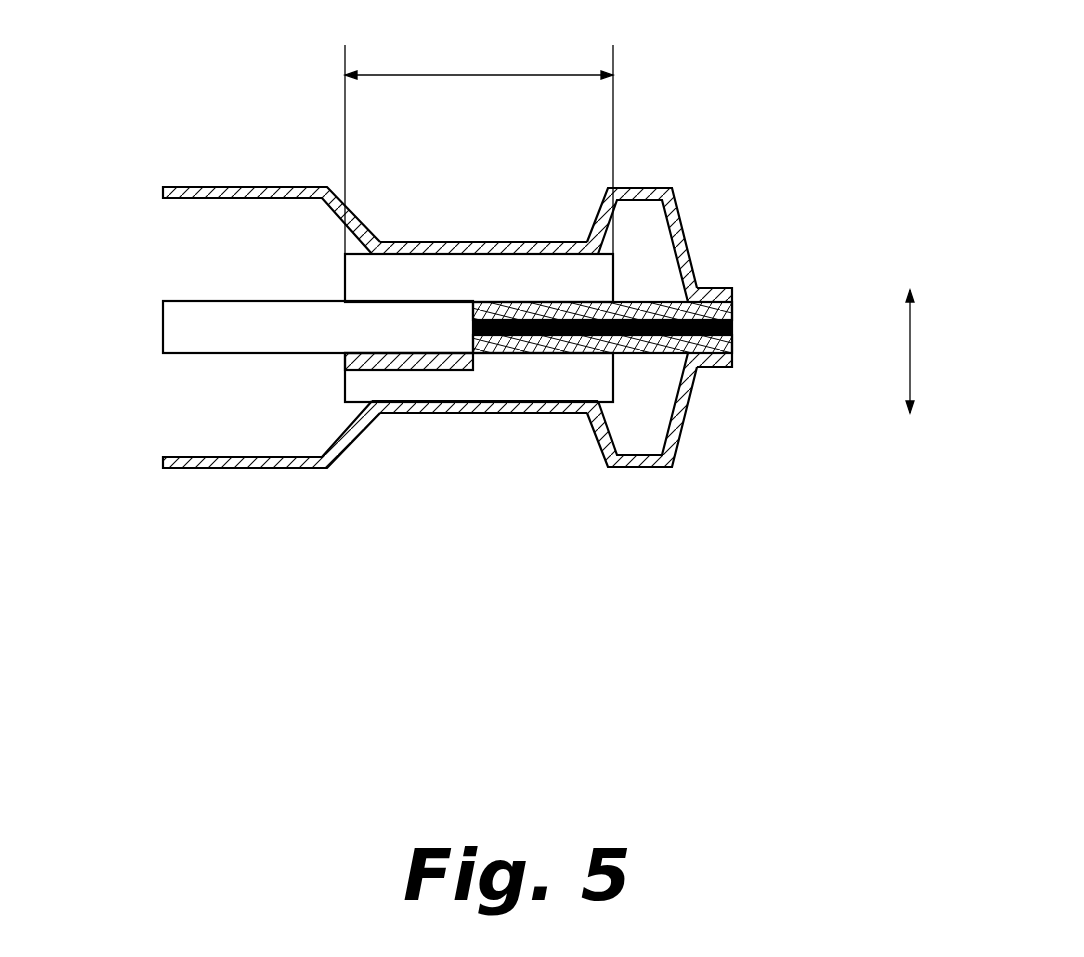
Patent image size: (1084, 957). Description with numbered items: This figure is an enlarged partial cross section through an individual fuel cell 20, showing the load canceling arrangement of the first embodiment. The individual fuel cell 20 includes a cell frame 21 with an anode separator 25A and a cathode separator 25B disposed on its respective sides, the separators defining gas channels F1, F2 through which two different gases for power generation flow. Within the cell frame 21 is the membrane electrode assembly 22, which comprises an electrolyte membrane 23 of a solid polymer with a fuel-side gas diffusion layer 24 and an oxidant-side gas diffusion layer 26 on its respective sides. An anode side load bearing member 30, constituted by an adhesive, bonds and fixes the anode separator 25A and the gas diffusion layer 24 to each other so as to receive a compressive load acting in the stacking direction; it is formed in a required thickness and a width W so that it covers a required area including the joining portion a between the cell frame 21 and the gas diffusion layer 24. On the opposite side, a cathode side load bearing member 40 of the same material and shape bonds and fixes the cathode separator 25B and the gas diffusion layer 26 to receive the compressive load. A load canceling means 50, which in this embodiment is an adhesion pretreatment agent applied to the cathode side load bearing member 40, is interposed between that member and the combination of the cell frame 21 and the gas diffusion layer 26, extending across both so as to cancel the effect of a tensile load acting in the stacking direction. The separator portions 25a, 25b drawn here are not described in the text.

The individual fuel cell 20 is at (514, 292).
The cell frame 21 is at (163, 328).
The membrane electrode assembly 22 is at (684, 361).
The electrolyte membrane 23 is at (732, 328).
The fuel-side gas diffusion layer 24 is at (732, 303).
The oxidant-side gas diffusion layer 26 is at (657, 383).
The anode separator 25A is at (297, 187).
The cathode separator 25B is at (310, 468).
The upper protruding portion 25a is at (647, 188).
The lower protruding portion 25b is at (645, 468).
The anode side load bearing member 30 is at (407, 270).
The cathode side load bearing member 40 is at (480, 385).
The load canceling means 50 is at (428, 362).
The joining portion a is at (483, 302).
The gas channel F1 is at (649, 217).
The gas channel F2 is at (658, 405).
The width W is at (479, 147).